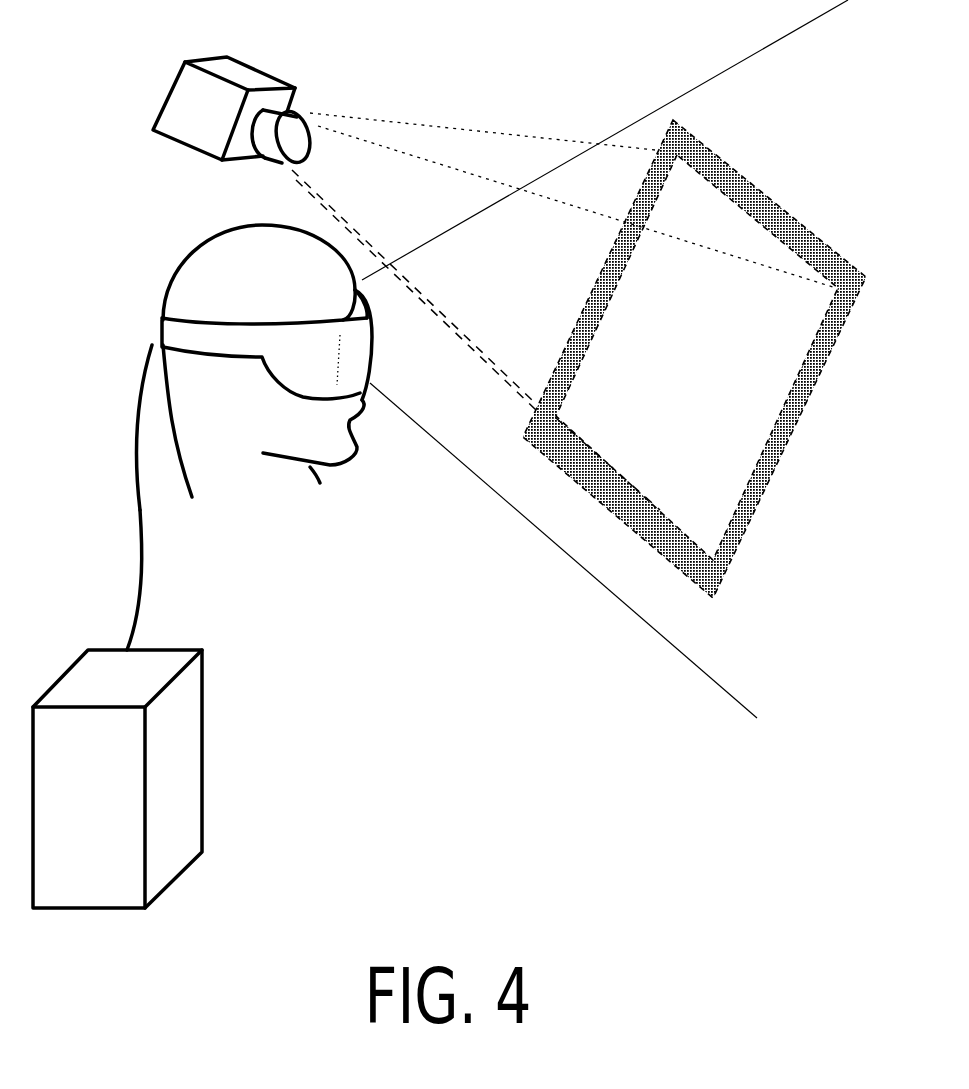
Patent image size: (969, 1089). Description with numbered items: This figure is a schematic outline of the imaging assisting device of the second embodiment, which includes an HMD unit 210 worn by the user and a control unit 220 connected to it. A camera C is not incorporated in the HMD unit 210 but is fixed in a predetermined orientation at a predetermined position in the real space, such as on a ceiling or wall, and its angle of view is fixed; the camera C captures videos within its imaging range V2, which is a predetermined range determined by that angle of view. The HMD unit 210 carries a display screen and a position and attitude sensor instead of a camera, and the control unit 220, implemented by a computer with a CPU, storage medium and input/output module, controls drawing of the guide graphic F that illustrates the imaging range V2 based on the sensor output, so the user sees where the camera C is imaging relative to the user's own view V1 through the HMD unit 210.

The camera C is at (253, 73).
The HMD unit 210 is at (162, 333).
The control unit 220 is at (160, 665).
The guide graphic F is at (707, 143).
The user's field of view V1 is at (703, 82).
The imaging range V2 is at (482, 129).